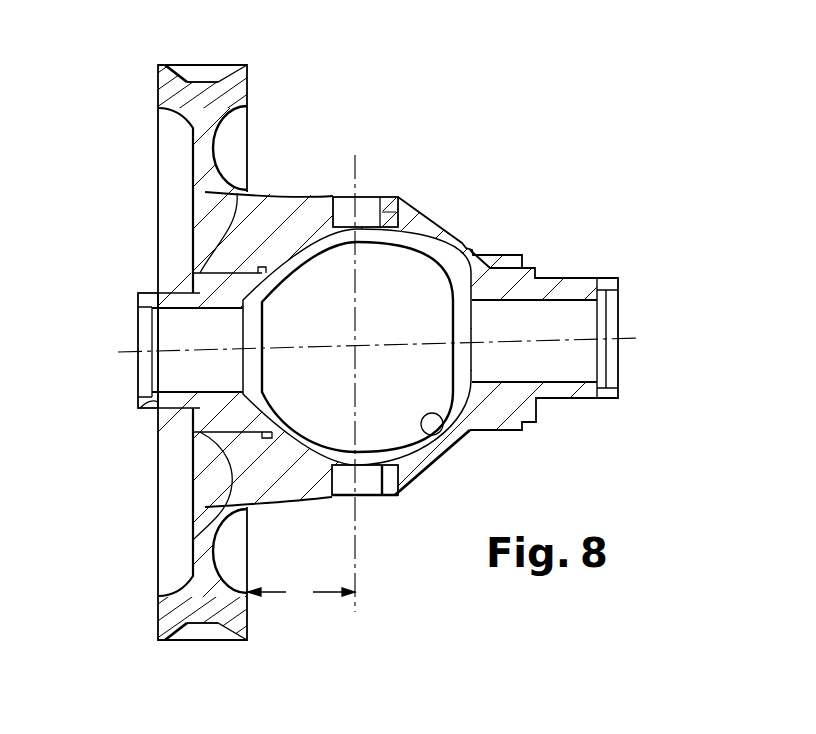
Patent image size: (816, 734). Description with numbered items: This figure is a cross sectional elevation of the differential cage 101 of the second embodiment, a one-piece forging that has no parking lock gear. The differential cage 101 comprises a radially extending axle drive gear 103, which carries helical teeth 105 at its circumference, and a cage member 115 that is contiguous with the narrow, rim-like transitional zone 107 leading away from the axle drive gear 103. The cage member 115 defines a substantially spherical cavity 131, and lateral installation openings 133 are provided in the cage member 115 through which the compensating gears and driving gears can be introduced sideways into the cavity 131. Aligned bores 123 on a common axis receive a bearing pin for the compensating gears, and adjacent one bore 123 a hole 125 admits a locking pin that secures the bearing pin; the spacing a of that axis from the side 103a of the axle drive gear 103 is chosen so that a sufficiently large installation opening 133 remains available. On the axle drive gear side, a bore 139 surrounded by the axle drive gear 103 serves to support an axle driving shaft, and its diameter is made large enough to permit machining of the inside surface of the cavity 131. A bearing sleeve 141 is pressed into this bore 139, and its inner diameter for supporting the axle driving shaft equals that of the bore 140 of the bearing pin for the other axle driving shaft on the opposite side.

The differential cage 101 is at (408, 331).
The axle drive gear 103 is at (258, 80).
The side of the axle drive gear 103a is at (250, 137).
The helical teeth 105 is at (185, 72).
The transitional zone 107 is at (238, 193).
The cage member 115 is at (397, 505).
The bores 123 is at (362, 210).
The hole 125 is at (401, 199).
The cavity 131 is at (425, 318).
The installation openings 133 is at (420, 433).
The bore 139 is at (157, 410).
The bore of the bearing pin 140 is at (575, 378).
The bearing sleeve 141 is at (138, 323).